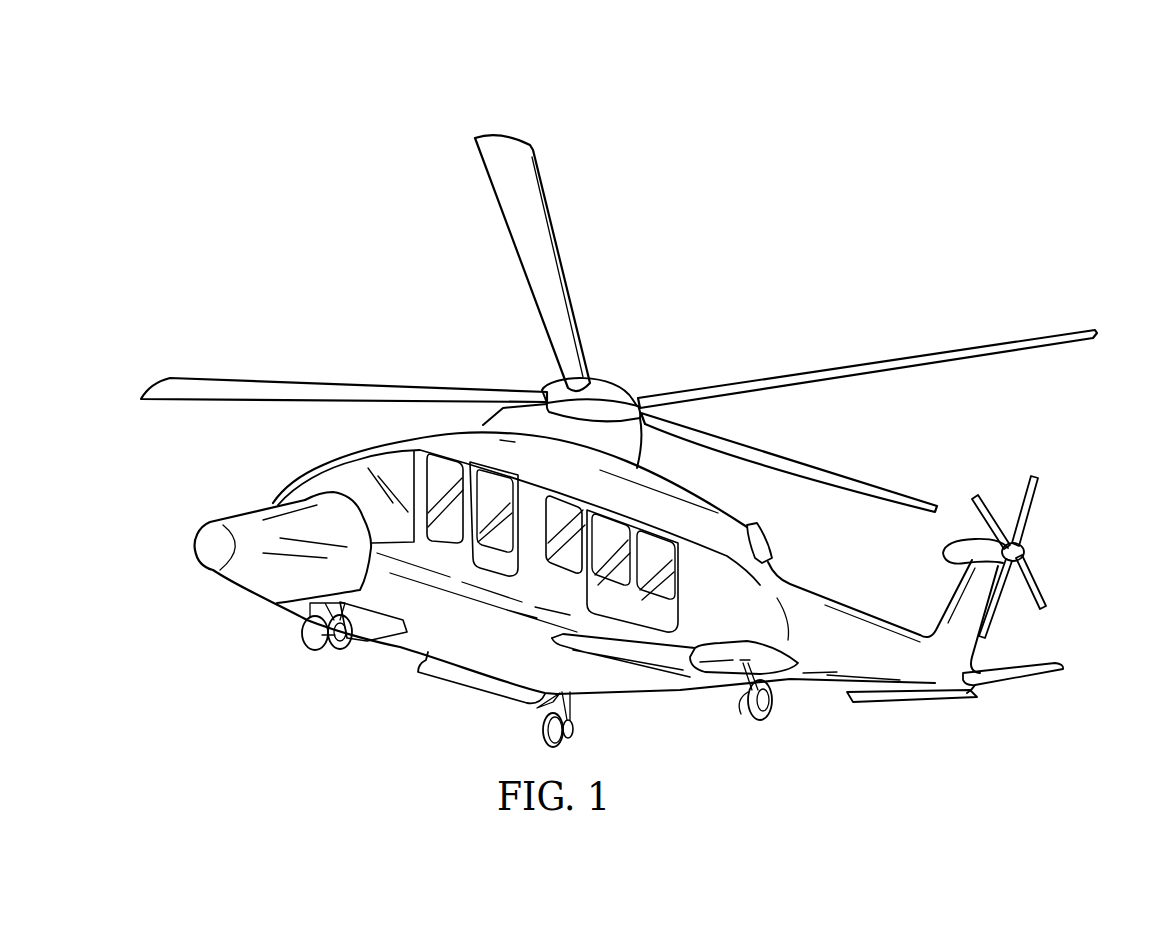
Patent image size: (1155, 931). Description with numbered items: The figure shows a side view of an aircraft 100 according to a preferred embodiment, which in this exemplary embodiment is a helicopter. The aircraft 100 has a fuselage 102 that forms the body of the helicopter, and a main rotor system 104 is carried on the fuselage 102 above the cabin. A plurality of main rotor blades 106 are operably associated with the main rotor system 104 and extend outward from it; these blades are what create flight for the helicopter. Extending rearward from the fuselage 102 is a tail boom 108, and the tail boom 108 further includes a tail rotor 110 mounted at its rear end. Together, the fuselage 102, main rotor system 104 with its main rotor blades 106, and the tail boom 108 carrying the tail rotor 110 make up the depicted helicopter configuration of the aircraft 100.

The aircraft 100 is at (284, 120).
The fuselage 102 is at (415, 643).
The main rotor system 104 is at (630, 354).
The main rotor blades 106 is at (851, 375).
The tail boom 108 is at (823, 670).
The tail rotor 110 is at (1028, 523).